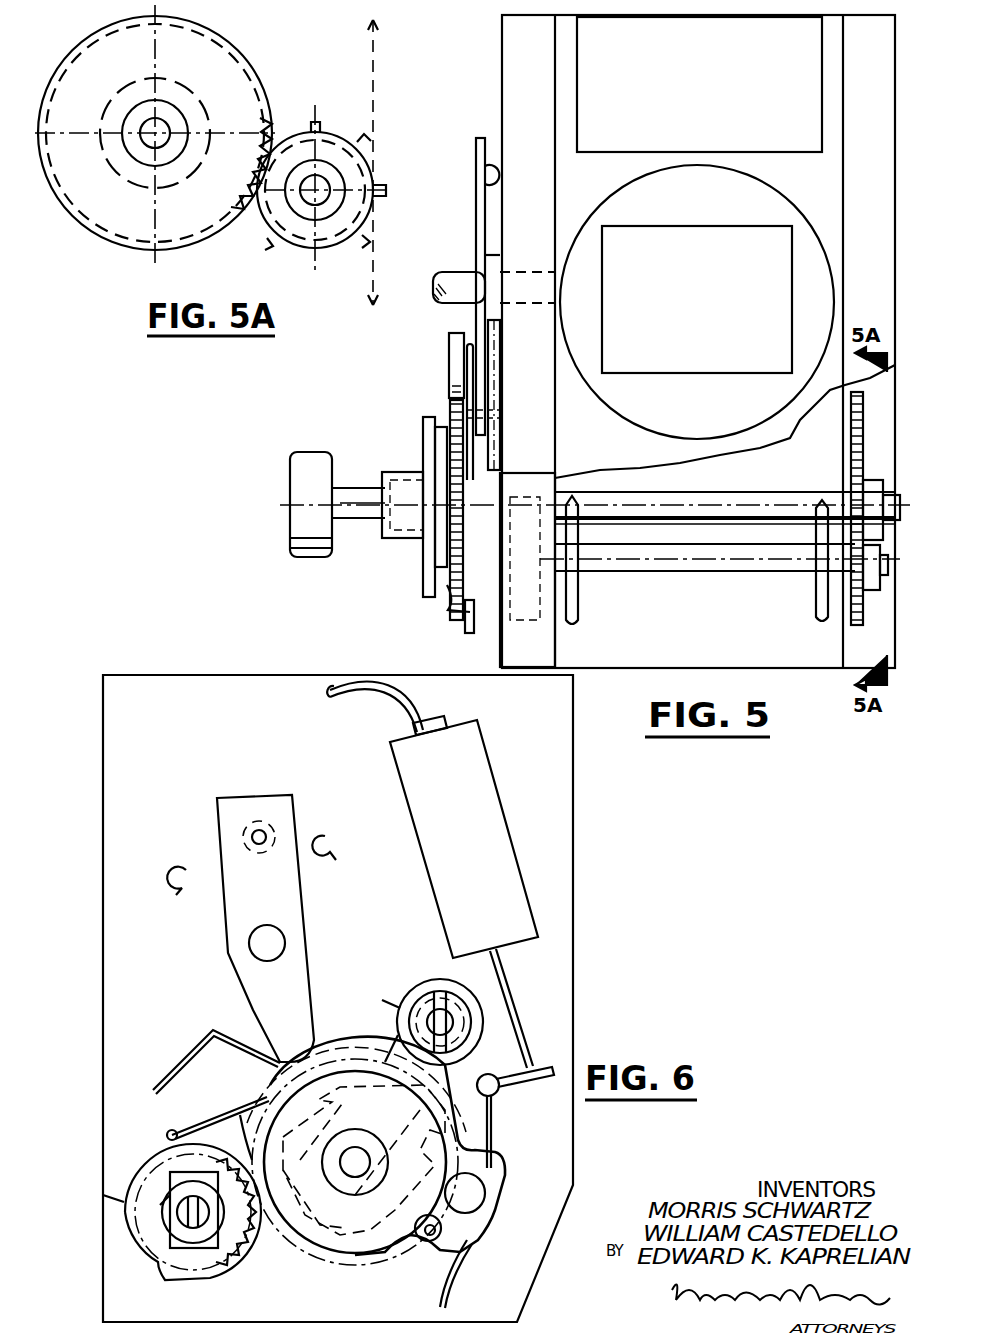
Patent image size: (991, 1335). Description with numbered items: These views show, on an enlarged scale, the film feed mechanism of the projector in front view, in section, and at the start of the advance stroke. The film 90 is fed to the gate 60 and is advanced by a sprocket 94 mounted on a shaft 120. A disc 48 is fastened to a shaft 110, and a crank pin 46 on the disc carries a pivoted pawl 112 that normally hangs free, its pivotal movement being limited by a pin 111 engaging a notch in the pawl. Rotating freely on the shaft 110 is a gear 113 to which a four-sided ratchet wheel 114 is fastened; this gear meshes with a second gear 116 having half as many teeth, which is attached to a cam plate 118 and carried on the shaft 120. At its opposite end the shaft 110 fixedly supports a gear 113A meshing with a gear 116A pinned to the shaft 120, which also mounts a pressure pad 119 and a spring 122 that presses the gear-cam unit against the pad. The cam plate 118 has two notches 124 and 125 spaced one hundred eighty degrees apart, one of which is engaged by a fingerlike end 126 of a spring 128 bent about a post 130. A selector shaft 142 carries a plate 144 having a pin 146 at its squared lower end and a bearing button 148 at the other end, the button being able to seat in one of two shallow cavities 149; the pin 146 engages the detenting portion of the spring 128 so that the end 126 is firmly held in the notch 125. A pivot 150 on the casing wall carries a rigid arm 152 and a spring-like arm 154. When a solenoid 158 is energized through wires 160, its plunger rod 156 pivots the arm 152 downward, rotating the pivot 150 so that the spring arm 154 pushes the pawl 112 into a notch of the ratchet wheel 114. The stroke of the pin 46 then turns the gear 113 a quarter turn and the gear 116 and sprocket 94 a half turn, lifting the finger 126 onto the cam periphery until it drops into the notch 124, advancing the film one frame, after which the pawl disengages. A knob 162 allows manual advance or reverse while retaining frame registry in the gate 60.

In FIG. 5, the crank pin 46 is at (398, 498).
In FIG. 5, the disc 48 is at (410, 482).
In FIG. 6, the disc 48 is at (502, 1178).
In FIG. 5, the gate 60 is at (792, 278).
In FIG. 5A, the film 90 is at (375, 78).
In FIG. 5A, the sprocket 94 is at (265, 235).
In FIG. 5, the sprocket 94 is at (580, 592).
In FIG. 6, the sprocket 94 is at (300, 1282).
In FIG. 5A, the shaft 110 is at (162, 128).
In FIG. 5, the shaft 110 is at (718, 498).
In FIG. 6, the pin 111 is at (450, 1258).
In FIG. 5, the pawl 112 is at (430, 475).
In FIG. 6, the pawl 112 is at (445, 1235).
In FIG. 5, the gear 113 is at (455, 616).
In FIG. 6, the gear 113 is at (335, 1275).
In FIG. 5A, the gear 113A is at (85, 212).
In FIG. 5, the gear 113A is at (855, 628).
In FIG. 5, the ratchet wheel 114 is at (447, 425).
In FIG. 6, the ratchet wheel 114 is at (378, 1265).
In FIG. 6, the gear 116 is at (162, 1208).
In FIG. 5A, the gear 116A is at (310, 248).
In FIG. 5, the cam plate 118 is at (468, 628).
In FIG. 6, the cam plate 118 is at (103, 1195).
In FIG. 5, the pressure pad 119 is at (498, 622).
In FIG. 5A, the shaft 120 is at (318, 185).
In FIG. 5, the shaft 120 is at (715, 568).
In FIG. 6, the shaft 120 is at (185, 1218).
In FIG. 5, the spring 122 is at (448, 603).
In FIG. 6, the spring 122 is at (250, 1272).
In FIG. 6, the notch 124 is at (255, 1100).
In FIG. 6, the notch 125 is at (162, 1268).
In FIG. 6, the fingerlike end 126 is at (168, 1132).
In FIG. 5, the spring 128 is at (470, 340).
In FIG. 6, the spring 128 is at (262, 1110).
In FIG. 5, the post 130 is at (460, 350).
In FIG. 5, the selector shaft 142 is at (455, 283).
In FIG. 6, the selector shaft 142 is at (262, 947).
In FIG. 5, the plate 144 is at (476, 203).
In FIG. 6, the plate 144 is at (233, 898).
In FIG. 6, the pin 146 is at (308, 1040).
In FIG. 5, the bearing button 148 is at (490, 160).
In FIG. 6, the bearing button 148 is at (250, 830).
In FIG. 6, the shallow cavities 149 is at (244, 875).
In FIG. 6, the pivot 150 is at (497, 1092).
In FIG. 6, the rigid arm 152 is at (500, 1076).
In FIG. 6, the spring-like arm 154 is at (492, 1142).
In FIG. 6, the plunger rod 156 is at (510, 998).
In FIG. 6, the solenoid 158 is at (475, 780).
In FIG. 6, the wires 160 is at (345, 695).
In FIG. 5, the knob 162 is at (300, 476).